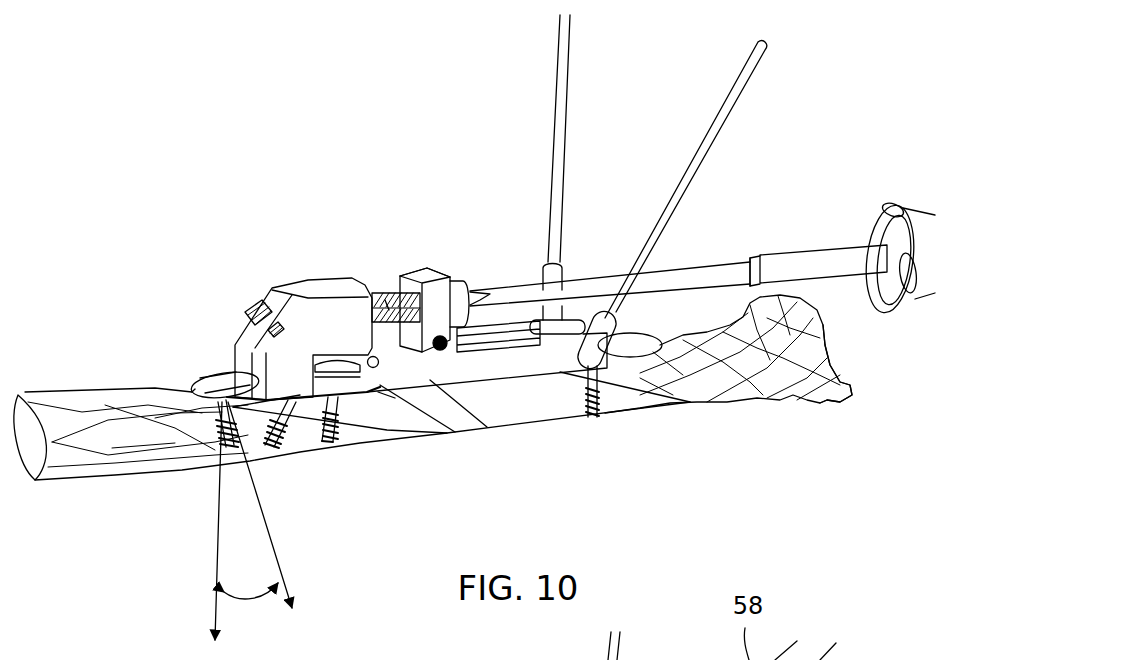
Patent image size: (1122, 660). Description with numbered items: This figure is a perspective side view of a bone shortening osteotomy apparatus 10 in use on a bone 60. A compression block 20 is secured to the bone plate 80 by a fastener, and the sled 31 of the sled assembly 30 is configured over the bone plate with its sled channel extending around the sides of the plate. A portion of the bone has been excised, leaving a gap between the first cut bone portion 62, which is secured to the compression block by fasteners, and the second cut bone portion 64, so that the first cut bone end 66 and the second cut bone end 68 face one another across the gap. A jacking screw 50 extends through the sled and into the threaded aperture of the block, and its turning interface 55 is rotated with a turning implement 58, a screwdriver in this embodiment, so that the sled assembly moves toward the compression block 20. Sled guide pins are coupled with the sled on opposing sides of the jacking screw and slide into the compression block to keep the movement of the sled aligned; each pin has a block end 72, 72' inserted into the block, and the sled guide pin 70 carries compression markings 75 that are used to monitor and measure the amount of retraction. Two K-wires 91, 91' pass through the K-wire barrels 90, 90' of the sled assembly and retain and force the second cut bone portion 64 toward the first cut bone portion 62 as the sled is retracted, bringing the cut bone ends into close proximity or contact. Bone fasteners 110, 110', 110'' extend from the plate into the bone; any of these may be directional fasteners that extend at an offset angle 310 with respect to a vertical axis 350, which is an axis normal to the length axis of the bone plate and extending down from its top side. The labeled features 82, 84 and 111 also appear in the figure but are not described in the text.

The bone shortening osteotomy apparatus 10 is at (318, 163).
The compression block 20 is at (310, 293).
The sled assembly 30 is at (434, 276).
The sled 31 is at (413, 275).
The jacking screw 50 is at (372, 297).
The turning interface 55 is at (463, 297).
The turning implement 58 is at (828, 263).
The bone 60 is at (793, 370).
The first cut bone portion 62 is at (417, 433).
The second cut bone portion 64 is at (683, 367).
The first cut bone end 66 is at (457, 400).
The second cut bone end 68 is at (483, 420).
The sled guide pin 70 is at (385, 293).
The block end 72 is at (223, 262).
The second clamp slot 72' is at (255, 276).
The compression markings 75 is at (389, 398).
The bone plate 80 is at (228, 366).
The foot edge 82 is at (207, 377).
The collar 84 is at (665, 340).
The K-wire barrel 90 is at (537, 260).
The K-wire barrel 90' is at (617, 392).
The K-wire 91 is at (531, 138).
The K-wire 91' is at (686, 179).
The bone fastener 110 is at (241, 477).
The bone fastener 110' is at (321, 472).
The bone fastener 110'' is at (288, 461).
The bone screw 111 is at (590, 410).
The offset angle 310 is at (240, 597).
The vertical axis 350 is at (218, 562).